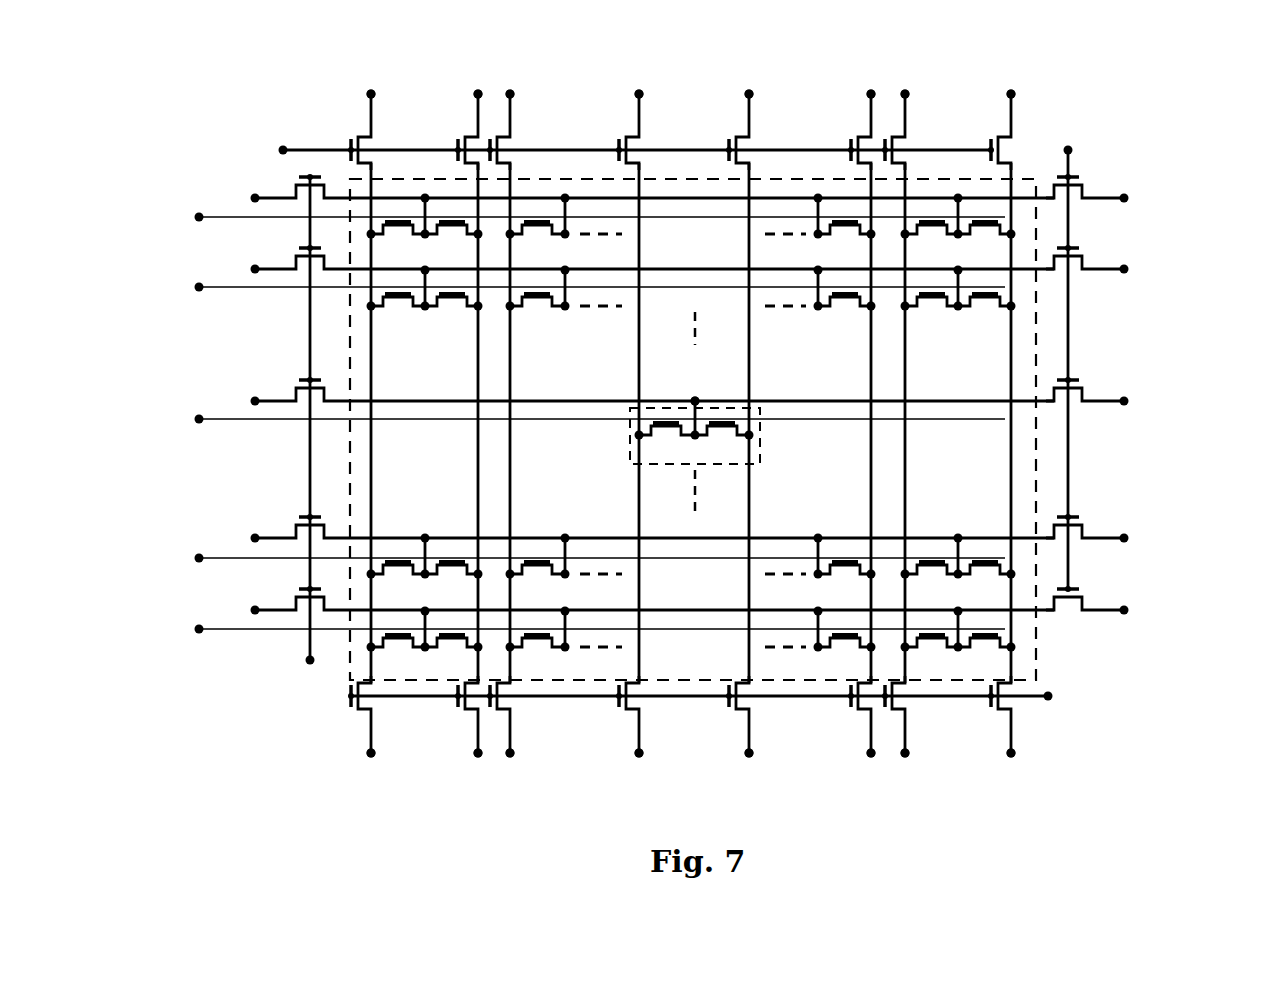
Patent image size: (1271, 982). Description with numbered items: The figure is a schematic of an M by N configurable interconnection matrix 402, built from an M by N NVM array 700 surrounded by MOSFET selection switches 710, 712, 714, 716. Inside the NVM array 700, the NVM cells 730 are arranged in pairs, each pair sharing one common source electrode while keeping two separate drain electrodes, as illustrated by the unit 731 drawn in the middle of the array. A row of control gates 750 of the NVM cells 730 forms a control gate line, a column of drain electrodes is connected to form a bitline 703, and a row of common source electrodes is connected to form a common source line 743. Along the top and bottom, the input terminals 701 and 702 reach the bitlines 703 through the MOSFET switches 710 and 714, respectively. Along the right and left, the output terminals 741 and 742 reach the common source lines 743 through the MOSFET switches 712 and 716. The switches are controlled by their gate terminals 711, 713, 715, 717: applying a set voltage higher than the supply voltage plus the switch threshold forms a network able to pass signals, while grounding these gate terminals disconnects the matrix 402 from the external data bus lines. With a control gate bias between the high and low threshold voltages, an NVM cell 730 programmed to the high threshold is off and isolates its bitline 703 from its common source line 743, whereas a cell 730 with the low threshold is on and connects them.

The configurable interconnection matrix 402 is at (187, 72).
The M×N NVM array 700 is at (357, 185).
The input terminal 701 is at (373, 93).
The input terminal 702 is at (373, 755).
The bitline 703 is at (478, 378).
The MOSFET switch 710 is at (357, 140).
The gate terminal 711 is at (283, 146).
The MOSFET switch 712 is at (1080, 187).
The gate terminal 713 is at (1069, 149).
The MOSFET switch 714 is at (355, 706).
The gate terminal 715 is at (1050, 694).
The MOSFET switch 716 is at (305, 205).
The gate terminal 717 is at (308, 663).
The NVM cell 730 is at (660, 405).
The unit 731 is at (682, 400).
The right output terminal 741 is at (1125, 195).
The left output terminal 742 is at (252, 195).
The common source line 743 is at (680, 202).
The control gate 750 is at (199, 214).